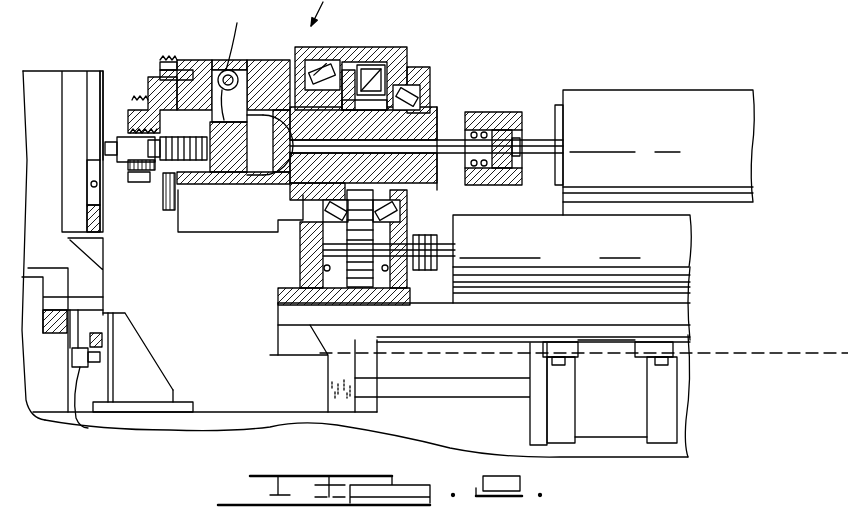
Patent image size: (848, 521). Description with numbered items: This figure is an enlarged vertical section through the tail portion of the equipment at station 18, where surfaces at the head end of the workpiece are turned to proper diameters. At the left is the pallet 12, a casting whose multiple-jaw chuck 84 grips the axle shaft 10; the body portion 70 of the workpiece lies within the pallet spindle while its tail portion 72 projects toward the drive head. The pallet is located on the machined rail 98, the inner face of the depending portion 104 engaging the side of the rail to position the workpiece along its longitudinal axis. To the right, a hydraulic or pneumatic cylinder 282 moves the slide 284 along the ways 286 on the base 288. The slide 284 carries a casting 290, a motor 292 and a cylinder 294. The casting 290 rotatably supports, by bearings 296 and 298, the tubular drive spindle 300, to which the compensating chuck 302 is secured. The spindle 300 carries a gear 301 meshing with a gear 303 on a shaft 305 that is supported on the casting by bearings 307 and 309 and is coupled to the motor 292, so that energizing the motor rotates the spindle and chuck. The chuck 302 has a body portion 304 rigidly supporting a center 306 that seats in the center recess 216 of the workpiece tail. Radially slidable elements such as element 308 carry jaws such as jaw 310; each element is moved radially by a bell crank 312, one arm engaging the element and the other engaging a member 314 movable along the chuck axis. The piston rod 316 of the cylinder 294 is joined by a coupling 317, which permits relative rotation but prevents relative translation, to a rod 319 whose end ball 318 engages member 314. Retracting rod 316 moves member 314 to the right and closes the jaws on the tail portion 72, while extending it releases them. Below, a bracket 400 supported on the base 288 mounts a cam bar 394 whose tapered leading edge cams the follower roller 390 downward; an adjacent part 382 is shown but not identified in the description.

The pallet 12 is at (50, 55).
The multiple-jaw chuck 84 is at (96, 70).
The axle shaft 10 is at (108, 135).
The body portion 70 is at (100, 147).
The tail portion 72 is at (118, 170).
The center recess 216 is at (148, 188).
The chuck jaw 310 is at (128, 118).
The radially slidable element 308 is at (197, 63).
The body portion 304 is at (268, 68).
The bell crank 312 is at (237, 62).
The center 306 is at (165, 158).
The member 314 is at (232, 158).
The compensating chuck 302 is at (223, 237).
The end ball 318 is at (363, 123).
The rod 319 is at (363, 176).
The gear 301 is at (352, 82).
The bearing 296 is at (325, 70).
The casting 290 is at (410, 63).
The bearing 298 is at (403, 98).
The tubular drive spindle 300 is at (430, 114).
The coupling 317 is at (487, 107).
The piston rod 316 is at (533, 135).
The station 18 is at (503, 50).
The cylinder 294 is at (598, 100).
The motor 292 is at (670, 252).
The slide 284 is at (590, 310).
The ways 286 is at (683, 333).
The base 288 is at (407, 427).
The hydraulic or pneumatic cylinder 282 is at (640, 427).
The gear 303 is at (312, 273).
The bearing 309 is at (322, 230).
The bearing 307 is at (413, 272).
The shaft 305 is at (410, 250).
The depending portion 104 is at (80, 298).
The rail 98 is at (68, 315).
The cam bar 394 is at (103, 332).
The rod 382 is at (115, 333).
The bracket 400 is at (150, 382).
The cam follower roller 390 is at (140, 419).